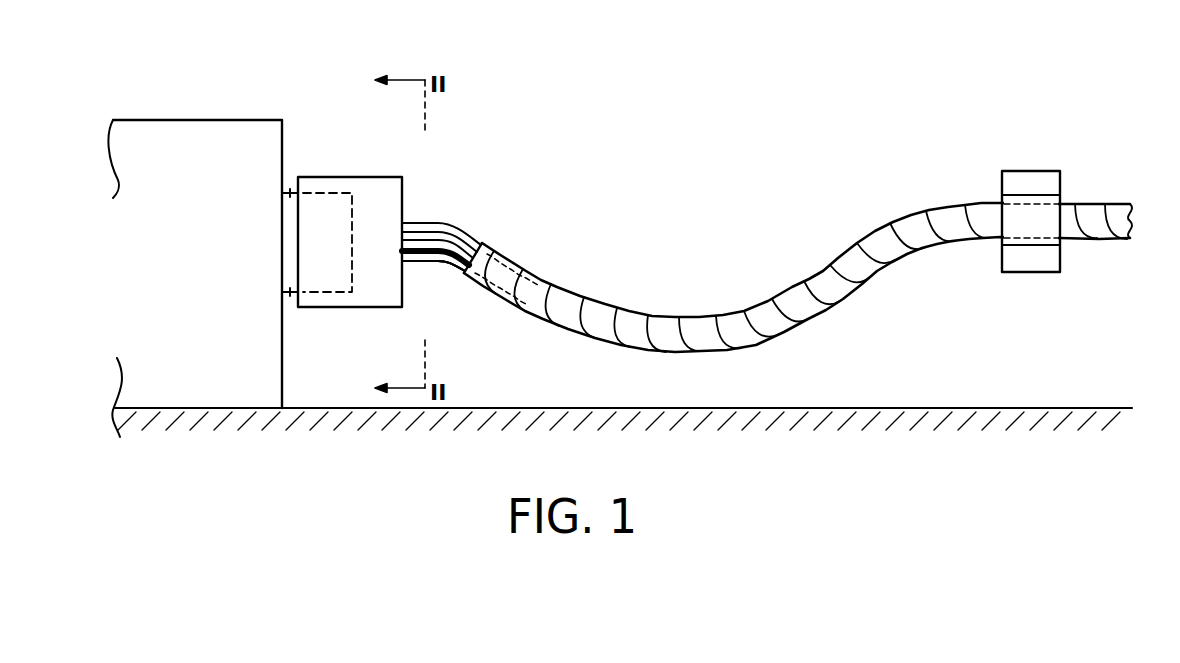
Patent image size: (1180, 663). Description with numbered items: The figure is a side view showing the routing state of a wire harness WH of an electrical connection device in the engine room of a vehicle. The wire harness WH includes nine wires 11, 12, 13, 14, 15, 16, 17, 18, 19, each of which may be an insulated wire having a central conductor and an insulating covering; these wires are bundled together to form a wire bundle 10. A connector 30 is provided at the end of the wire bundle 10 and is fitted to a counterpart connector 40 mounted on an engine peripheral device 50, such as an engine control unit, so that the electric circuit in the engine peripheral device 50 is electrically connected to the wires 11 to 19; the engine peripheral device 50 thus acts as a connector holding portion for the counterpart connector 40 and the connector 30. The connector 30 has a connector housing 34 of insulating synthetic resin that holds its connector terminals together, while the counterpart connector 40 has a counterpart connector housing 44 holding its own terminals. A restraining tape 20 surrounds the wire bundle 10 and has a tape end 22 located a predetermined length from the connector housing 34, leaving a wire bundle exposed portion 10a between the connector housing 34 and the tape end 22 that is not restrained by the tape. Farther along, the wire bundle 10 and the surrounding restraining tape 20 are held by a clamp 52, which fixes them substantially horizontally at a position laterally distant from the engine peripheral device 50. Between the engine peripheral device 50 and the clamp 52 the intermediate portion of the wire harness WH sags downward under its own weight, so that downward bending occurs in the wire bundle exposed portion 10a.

The wire bundle 10 is at (540, 262).
The wire bundle exposed portion 10a is at (477, 224).
The wire 11 is at (443, 225).
The wire 12 is at (439, 242).
The wire 13 is at (437, 249).
The wire 14 is at (415, 247).
The wire 15 is at (435, 257).
The wire 16 is at (435, 260).
The wire 17 is at (427, 260).
The wire 18 is at (433, 266).
The wire 19 is at (433, 266).
The restraining tape 20 is at (709, 317).
The tape end 22 is at (499, 232).
The connector 30 is at (369, 160).
The connector housing 34 is at (387, 290).
The counterpart connector 40 is at (292, 164).
The counterpart connector housing 44 is at (290, 300).
The engine peripheral device 50 is at (183, 106).
The clamp 52 is at (1030, 180).
The wire harness WH is at (633, 185).